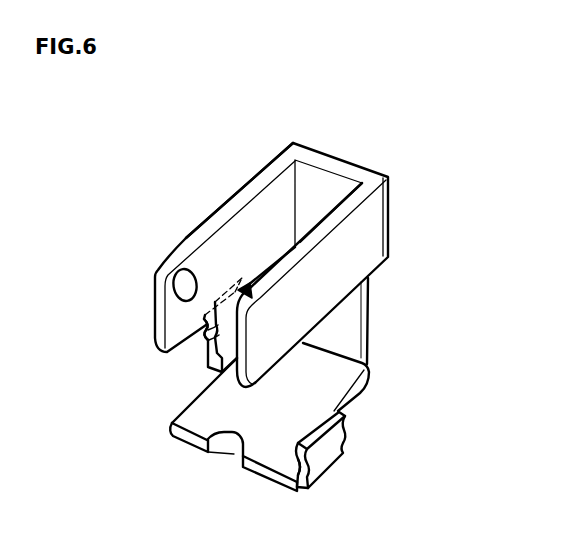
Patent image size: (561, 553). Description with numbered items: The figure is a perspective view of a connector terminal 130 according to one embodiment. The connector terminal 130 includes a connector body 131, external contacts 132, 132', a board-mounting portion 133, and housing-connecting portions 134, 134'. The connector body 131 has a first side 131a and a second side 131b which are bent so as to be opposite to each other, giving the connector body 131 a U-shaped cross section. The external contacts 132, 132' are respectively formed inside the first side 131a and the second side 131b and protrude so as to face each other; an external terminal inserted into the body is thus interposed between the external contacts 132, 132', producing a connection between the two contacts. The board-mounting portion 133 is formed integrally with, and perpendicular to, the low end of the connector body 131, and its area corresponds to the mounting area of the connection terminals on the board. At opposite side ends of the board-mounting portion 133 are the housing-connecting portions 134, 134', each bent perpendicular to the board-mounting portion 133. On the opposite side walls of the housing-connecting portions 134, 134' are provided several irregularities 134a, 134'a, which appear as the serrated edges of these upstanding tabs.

The connector terminal 130 is at (101, 129).
The connector body 131 is at (340, 162).
The first side 131a is at (235, 199).
The second side 131b is at (347, 205).
The external contact 132 is at (140, 285).
The external contact 132' is at (178, 262).
The board-mounting portion 133 is at (193, 433).
The housing-connecting portion 134 is at (171, 355).
The irregularities 134a is at (203, 329).
The housing-connecting portion 134' is at (348, 461).
The irregularities 134'a is at (299, 503).